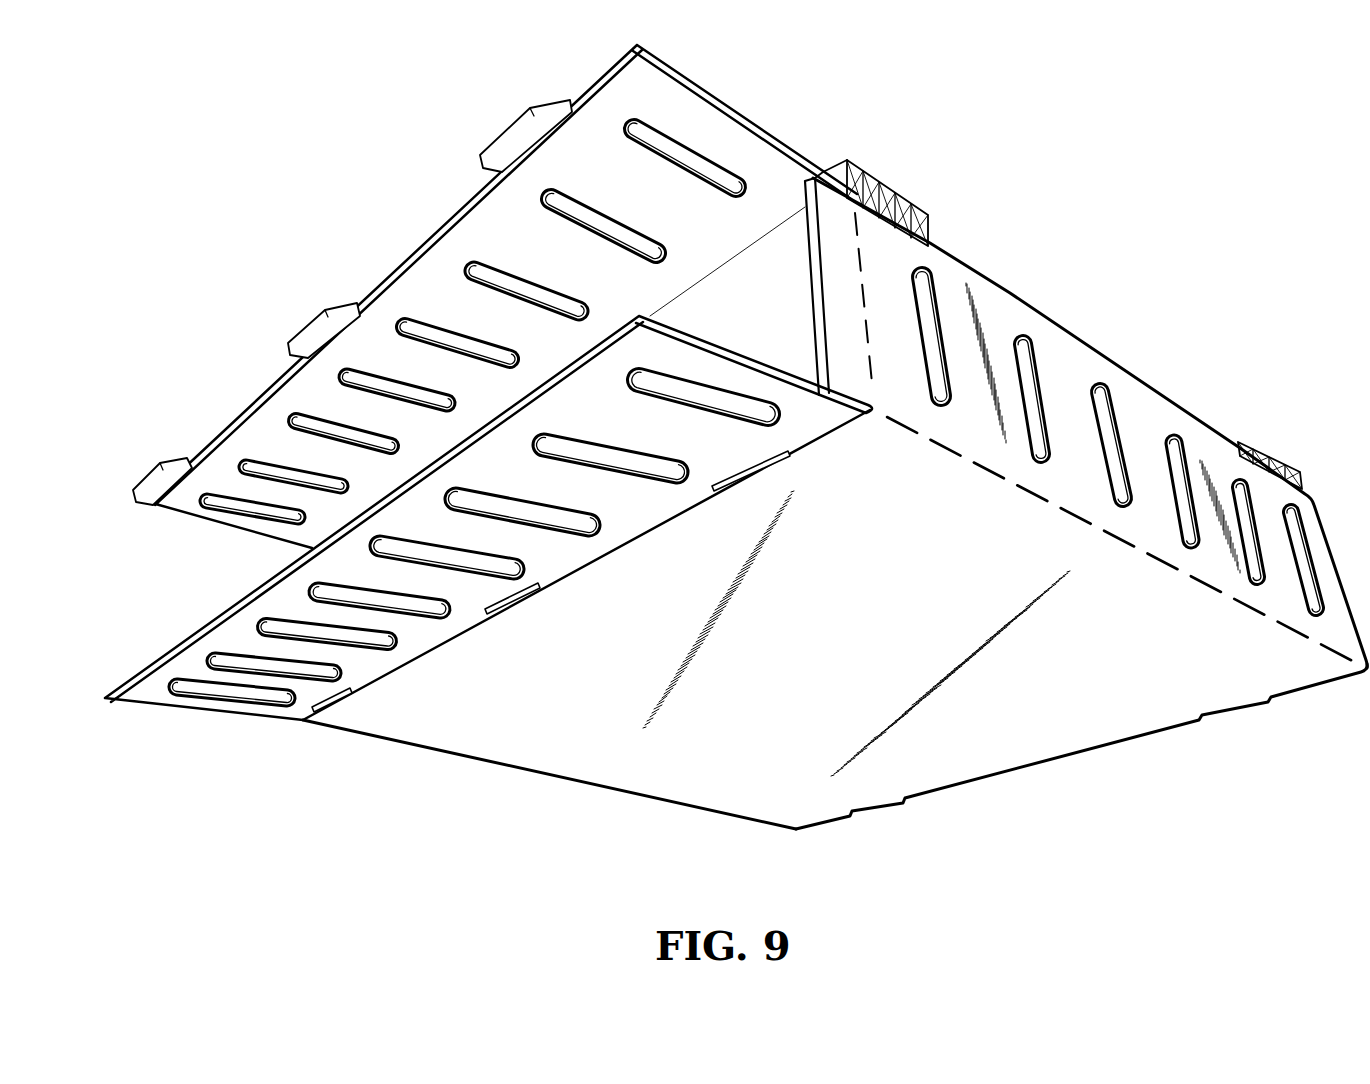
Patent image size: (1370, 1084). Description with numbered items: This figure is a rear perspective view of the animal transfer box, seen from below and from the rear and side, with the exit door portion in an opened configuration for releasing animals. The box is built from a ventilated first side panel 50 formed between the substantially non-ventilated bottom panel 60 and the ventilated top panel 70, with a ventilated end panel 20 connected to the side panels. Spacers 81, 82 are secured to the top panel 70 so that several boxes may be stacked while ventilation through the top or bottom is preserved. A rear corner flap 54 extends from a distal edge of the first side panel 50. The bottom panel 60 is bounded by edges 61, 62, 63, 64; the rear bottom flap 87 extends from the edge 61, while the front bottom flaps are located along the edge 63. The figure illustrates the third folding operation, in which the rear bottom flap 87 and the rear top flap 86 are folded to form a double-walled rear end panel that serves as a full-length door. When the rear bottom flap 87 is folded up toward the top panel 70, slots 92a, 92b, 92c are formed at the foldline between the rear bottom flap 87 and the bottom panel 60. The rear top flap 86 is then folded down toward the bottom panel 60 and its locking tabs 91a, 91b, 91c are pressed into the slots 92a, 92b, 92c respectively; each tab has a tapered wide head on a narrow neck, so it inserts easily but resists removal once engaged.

The ventilated end panel 20 is at (717, 437).
The first side panel 50 is at (1070, 360).
The rear corner flap 54 is at (828, 323).
The bottom panel 60 is at (835, 619).
The edge of bottom panel 61 is at (468, 630).
The edge of bottom panel 62 is at (1075, 512).
The edge of bottom panel 63 is at (1068, 752).
The edge of bottom panel 64 is at (650, 795).
The top panel 70 is at (1090, 398).
The spacer 81 is at (880, 190).
The spacer 82 is at (1283, 450).
The rear top flap 86 is at (462, 312).
The rear bottom flap 87 is at (512, 556).
The locking tab 91a is at (497, 140).
The locking tab 91b is at (303, 323).
The locking tab 91c is at (160, 488).
The slot 92a is at (756, 472).
The slot 92b is at (535, 600).
The slot 92c is at (343, 698).